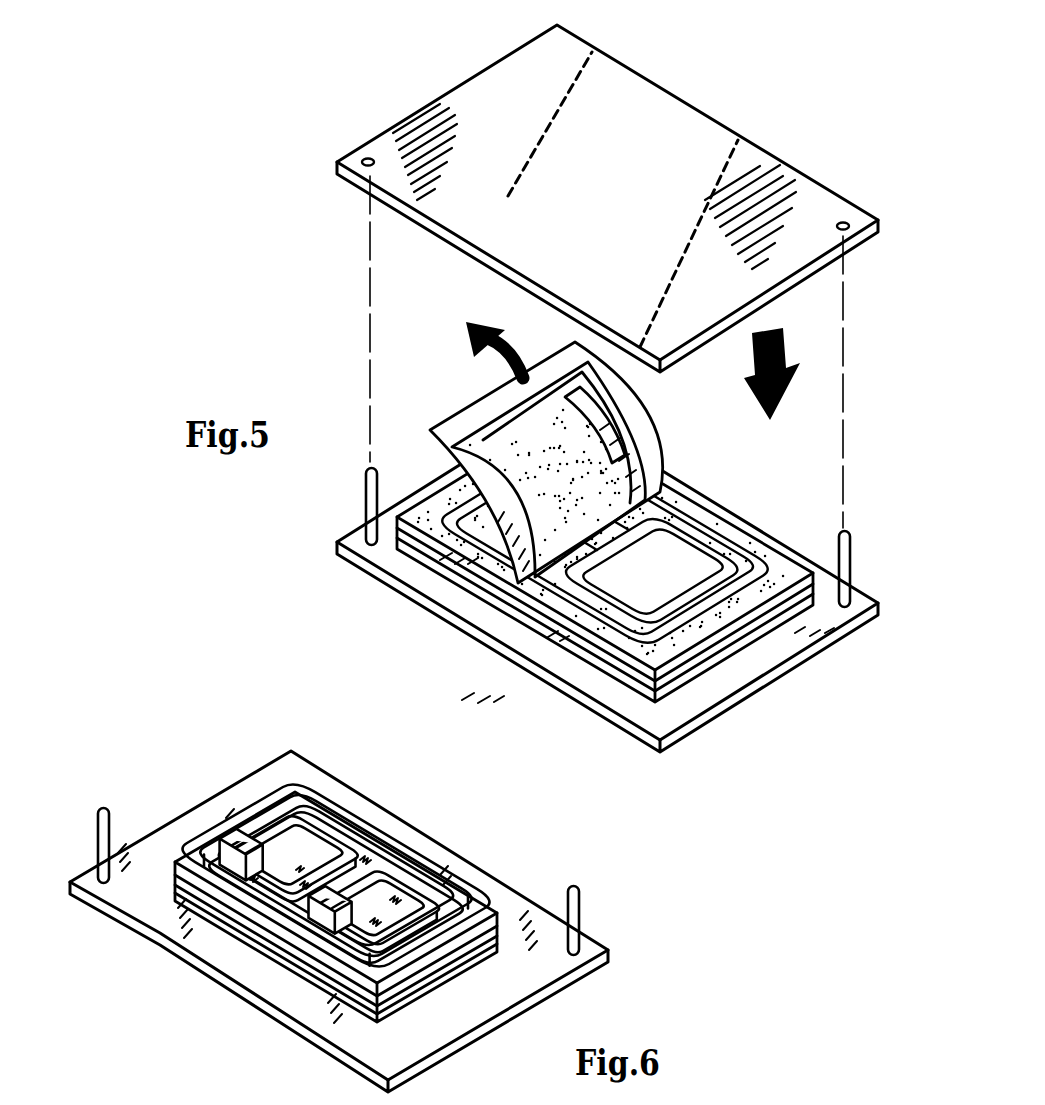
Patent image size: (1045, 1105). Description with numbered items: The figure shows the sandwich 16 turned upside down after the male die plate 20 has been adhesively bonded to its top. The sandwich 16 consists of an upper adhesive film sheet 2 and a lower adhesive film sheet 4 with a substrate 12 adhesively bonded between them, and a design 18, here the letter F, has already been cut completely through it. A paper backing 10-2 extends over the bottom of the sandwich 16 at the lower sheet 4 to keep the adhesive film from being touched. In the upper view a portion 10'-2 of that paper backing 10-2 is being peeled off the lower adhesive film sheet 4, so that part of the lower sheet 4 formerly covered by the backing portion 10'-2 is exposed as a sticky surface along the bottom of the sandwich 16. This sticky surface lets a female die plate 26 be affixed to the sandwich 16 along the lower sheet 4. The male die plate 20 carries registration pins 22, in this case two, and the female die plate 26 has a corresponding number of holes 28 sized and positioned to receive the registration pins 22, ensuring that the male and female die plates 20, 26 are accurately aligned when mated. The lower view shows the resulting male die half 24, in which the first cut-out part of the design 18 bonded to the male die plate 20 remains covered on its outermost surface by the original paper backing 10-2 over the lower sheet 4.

In FIG. 5, the upper adhesive film sheet 2 is at (738, 645).
In FIG. 6, the upper adhesive film sheet 2 is at (420, 985).
In FIG. 5, the lower adhesive film sheet 4 is at (780, 600).
In FIG. 6, the lower adhesive film sheet 4 is at (482, 950).
In FIG. 5, the paper backing 10-2 is at (722, 543).
In FIG. 6, the paper backing 10-2 is at (258, 850).
In FIG. 5, the portion of the paper backing 10'-2 is at (454, 462).
In FIG. 5, the substrate 12 is at (760, 620).
In FIG. 6, the substrate 12 is at (447, 962).
In FIG. 5, the sandwich 16 is at (497, 613).
In FIG. 5, the design 18 is at (758, 550).
In FIG. 6, the design 18 is at (318, 958).
In FIG. 5, the male die plate 20 is at (448, 605).
In FIG. 6, the male die plate 20 is at (417, 840).
In FIG. 5, the registration pins 22 is at (360, 496).
In FIG. 6, the registration pins 22 is at (100, 830).
In FIG. 6, the male die half 24 is at (241, 1014).
In FIG. 5, the female die plate 26 is at (620, 145).
In FIG. 5, the holes 28 is at (366, 160).